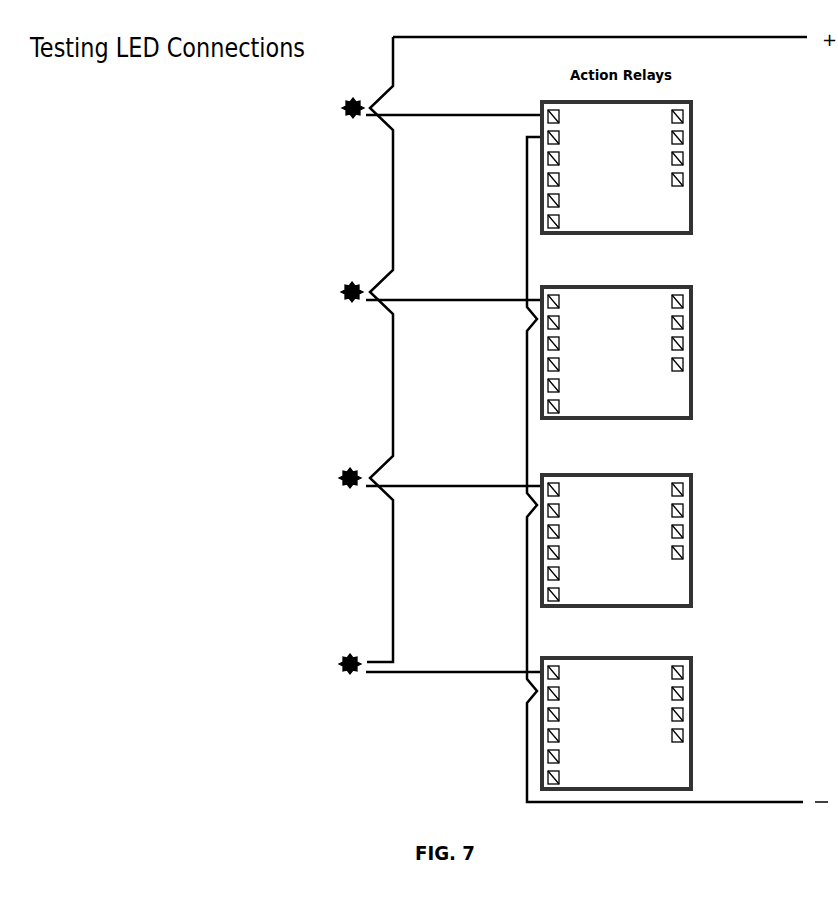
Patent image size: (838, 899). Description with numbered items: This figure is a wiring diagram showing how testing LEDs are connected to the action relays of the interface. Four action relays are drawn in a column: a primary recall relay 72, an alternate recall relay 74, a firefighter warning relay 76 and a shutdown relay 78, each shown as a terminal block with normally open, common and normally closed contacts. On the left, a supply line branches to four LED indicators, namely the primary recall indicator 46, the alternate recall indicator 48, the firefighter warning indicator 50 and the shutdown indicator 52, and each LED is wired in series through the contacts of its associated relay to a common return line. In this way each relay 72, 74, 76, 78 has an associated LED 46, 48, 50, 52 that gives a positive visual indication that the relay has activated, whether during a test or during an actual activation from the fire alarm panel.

The primary recall indicator 46 is at (343, 112).
The alternate recall indicator 48 is at (342, 295).
The firefighter warning indicator 50 is at (341, 482).
The shutdown indicator 52 is at (342, 668).
The primary recall relay 72 is at (625, 165).
The alternate recall relay 74 is at (625, 352).
The firefighter warning relay 76 is at (630, 540).
The shutdown relay 78 is at (623, 728).